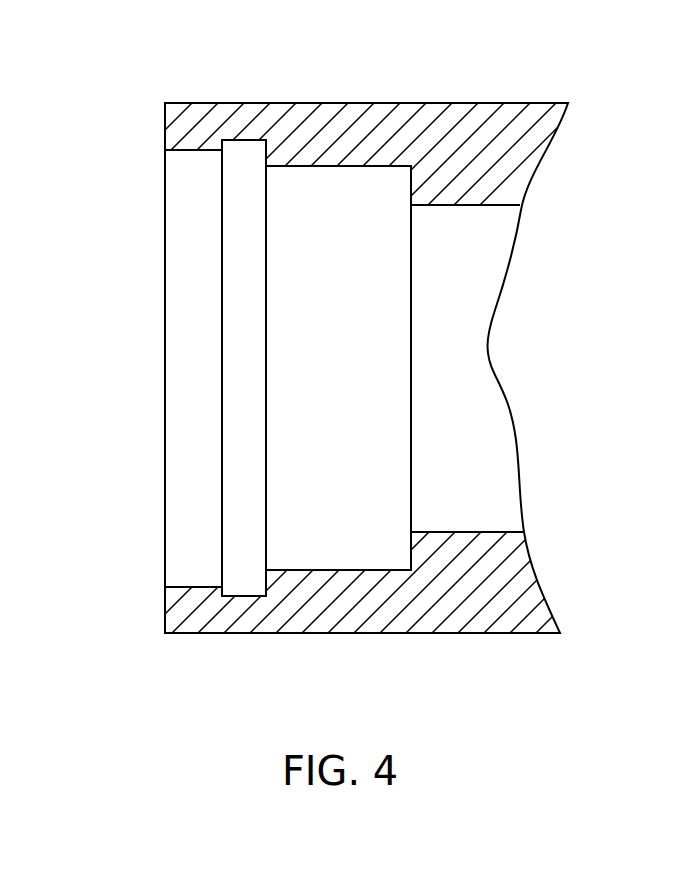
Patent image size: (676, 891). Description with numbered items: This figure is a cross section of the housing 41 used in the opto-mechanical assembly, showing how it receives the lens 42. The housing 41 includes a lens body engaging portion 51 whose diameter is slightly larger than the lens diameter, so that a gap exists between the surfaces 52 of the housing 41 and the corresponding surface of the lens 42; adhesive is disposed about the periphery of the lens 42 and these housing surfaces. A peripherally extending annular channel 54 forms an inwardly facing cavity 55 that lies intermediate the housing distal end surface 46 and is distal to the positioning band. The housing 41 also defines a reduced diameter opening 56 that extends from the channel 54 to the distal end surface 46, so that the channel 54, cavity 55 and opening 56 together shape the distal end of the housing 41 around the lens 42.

The housing 41 is at (447, 103).
The lens 42 is at (453, 547).
The housing distal end surface 46 is at (165, 122).
The lens body engaging portion 51 is at (325, 202).
The surfaces of the housing 52 is at (320, 568).
The peripherally extending annular channel 54 is at (243, 138).
The inwardly facing cavity 55 is at (235, 150).
The reduced diameter opening 56 is at (180, 260).